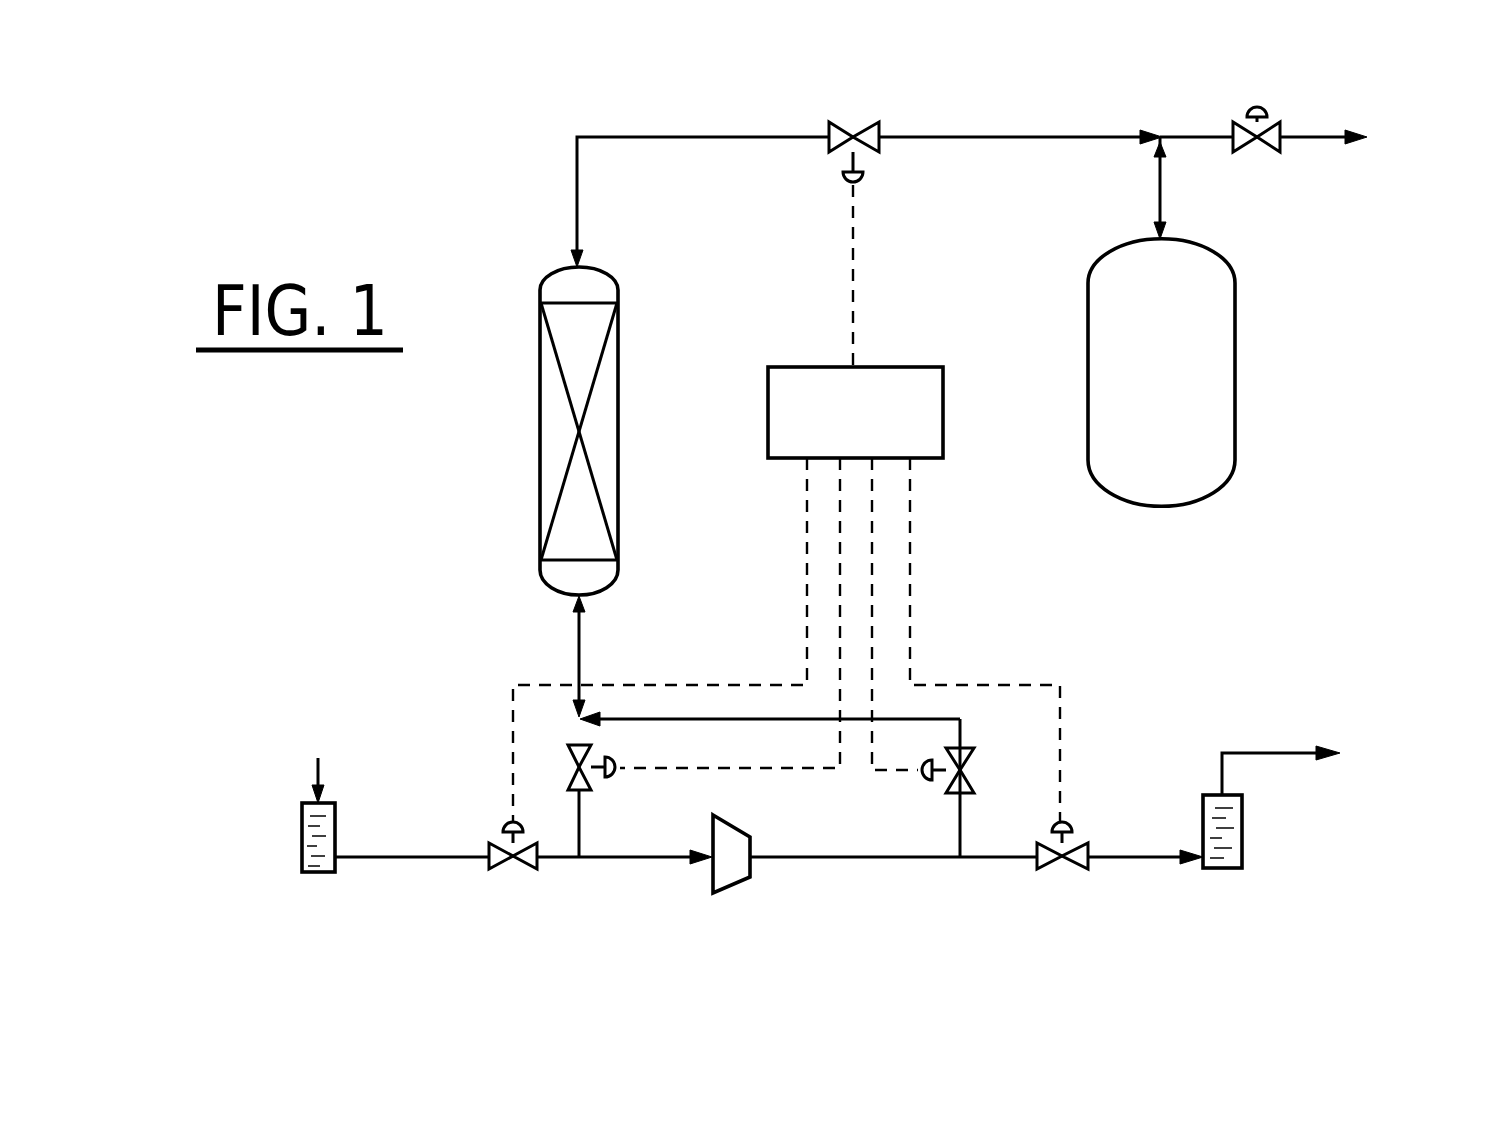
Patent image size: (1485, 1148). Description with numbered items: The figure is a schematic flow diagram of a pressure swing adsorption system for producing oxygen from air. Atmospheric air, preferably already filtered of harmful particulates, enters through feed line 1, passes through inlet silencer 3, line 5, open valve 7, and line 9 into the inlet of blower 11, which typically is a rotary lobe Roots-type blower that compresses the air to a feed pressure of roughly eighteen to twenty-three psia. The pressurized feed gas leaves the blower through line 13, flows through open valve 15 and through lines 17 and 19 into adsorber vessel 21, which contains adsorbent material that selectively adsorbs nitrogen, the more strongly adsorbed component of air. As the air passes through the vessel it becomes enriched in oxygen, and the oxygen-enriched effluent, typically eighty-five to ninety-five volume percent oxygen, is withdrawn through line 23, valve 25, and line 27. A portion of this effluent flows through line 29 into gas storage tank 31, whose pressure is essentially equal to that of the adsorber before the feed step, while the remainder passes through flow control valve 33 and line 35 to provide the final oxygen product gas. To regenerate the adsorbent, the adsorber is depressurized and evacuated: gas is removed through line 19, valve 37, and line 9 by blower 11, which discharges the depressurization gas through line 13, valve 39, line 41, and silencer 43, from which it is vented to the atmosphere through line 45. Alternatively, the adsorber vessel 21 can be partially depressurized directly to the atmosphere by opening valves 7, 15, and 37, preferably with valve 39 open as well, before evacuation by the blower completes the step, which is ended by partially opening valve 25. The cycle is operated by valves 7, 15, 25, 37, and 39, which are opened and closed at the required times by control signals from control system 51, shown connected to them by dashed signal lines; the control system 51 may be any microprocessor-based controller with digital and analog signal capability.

The feed line 1 is at (314, 771).
The inlet silencer 3 is at (302, 840).
The line 5 is at (438, 857).
The valve 7 is at (513, 870).
The line 9 is at (626, 859).
The blower 11 is at (735, 892).
The line 13 is at (879, 857).
The valve 15 is at (964, 774).
The line 17 is at (734, 719).
The line 19 is at (584, 670).
The adsorber vessel 21 is at (540, 432).
The line 23 is at (577, 184).
The valve 25 is at (830, 126).
The line 27 is at (963, 137).
The line 29 is at (1159, 195).
The gas storage tank 31 is at (1236, 310).
The flow control valve 33 is at (1263, 142).
The line 35 is at (1305, 137).
The valve 37 is at (596, 788).
The valve 39 is at (1058, 874).
The line 41 is at (1143, 857).
The silencer 43 is at (1244, 836).
The line 45 is at (1259, 752).
The control system 51 is at (906, 367).